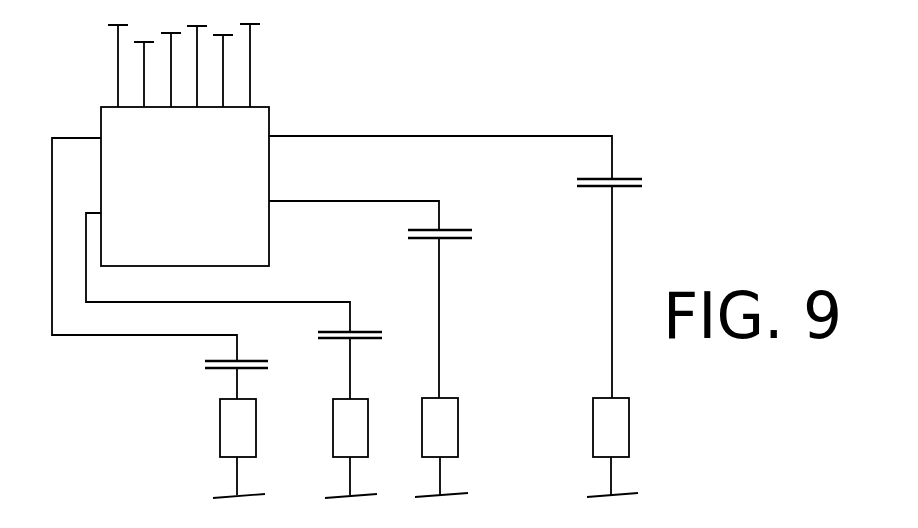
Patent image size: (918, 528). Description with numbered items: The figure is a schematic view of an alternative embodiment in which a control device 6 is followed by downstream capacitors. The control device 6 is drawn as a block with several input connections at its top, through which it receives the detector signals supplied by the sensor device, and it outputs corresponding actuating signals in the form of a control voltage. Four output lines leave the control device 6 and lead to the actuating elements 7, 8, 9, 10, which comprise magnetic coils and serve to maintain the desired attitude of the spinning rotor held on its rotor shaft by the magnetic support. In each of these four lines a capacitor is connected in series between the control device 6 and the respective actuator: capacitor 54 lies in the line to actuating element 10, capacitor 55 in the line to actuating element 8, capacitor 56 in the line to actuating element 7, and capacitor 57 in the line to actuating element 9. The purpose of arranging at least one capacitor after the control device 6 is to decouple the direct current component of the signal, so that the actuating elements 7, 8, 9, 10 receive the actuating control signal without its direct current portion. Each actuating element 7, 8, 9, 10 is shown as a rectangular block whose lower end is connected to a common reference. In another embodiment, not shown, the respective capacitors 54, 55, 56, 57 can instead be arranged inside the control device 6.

The control device 6 is at (248, 128).
The actuating element 7 is at (447, 432).
The actuating element 8 is at (347, 437).
The actuating element 9 is at (618, 428).
The actuating element 10 is at (232, 428).
The capacitor 54 is at (218, 370).
The capacitor 55 is at (356, 331).
The capacitor 56 is at (452, 242).
The capacitor 57 is at (600, 188).